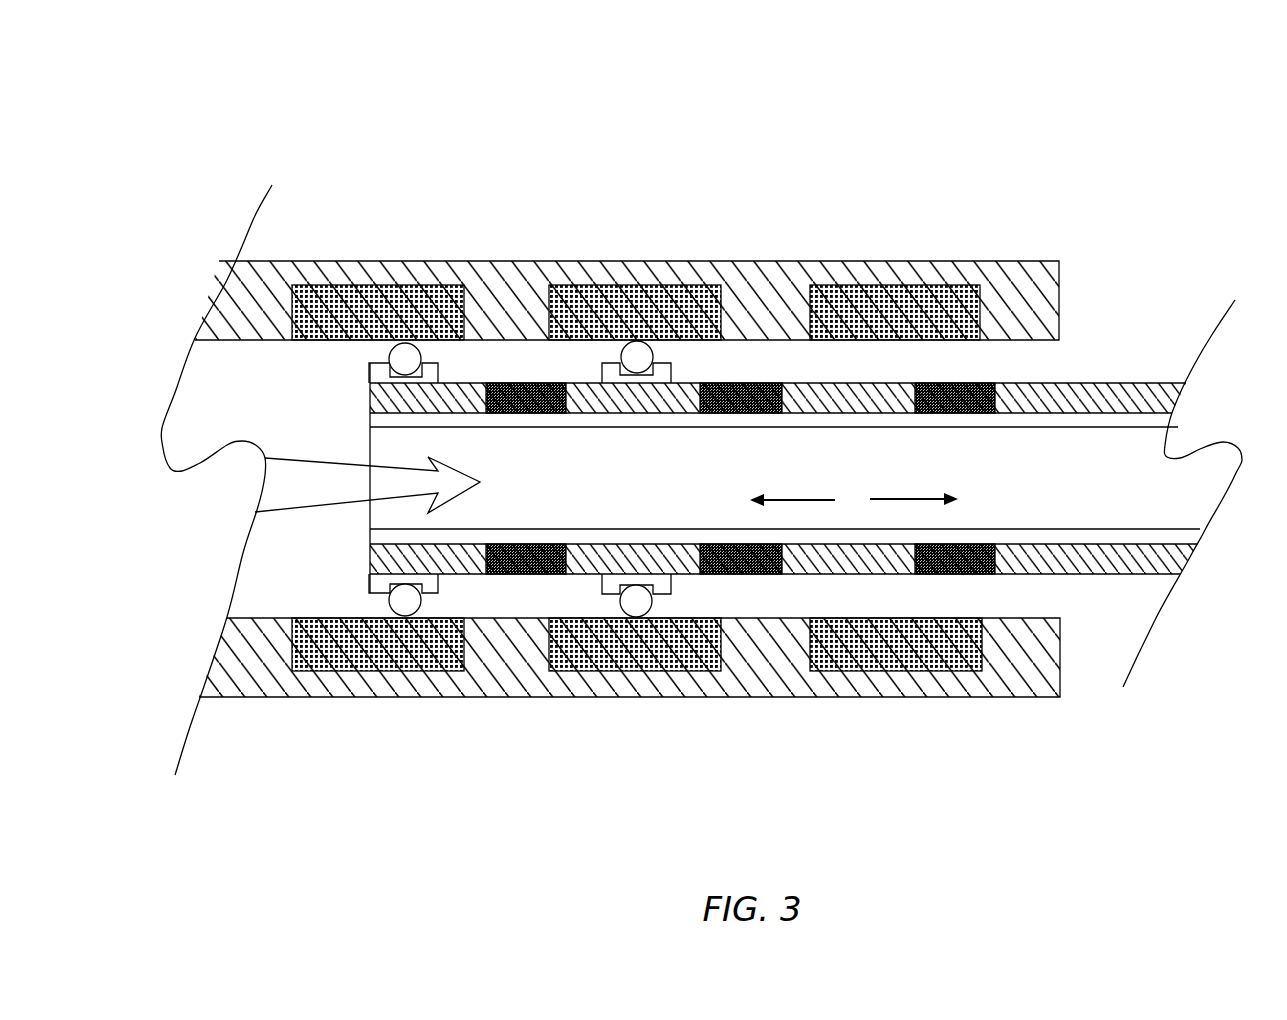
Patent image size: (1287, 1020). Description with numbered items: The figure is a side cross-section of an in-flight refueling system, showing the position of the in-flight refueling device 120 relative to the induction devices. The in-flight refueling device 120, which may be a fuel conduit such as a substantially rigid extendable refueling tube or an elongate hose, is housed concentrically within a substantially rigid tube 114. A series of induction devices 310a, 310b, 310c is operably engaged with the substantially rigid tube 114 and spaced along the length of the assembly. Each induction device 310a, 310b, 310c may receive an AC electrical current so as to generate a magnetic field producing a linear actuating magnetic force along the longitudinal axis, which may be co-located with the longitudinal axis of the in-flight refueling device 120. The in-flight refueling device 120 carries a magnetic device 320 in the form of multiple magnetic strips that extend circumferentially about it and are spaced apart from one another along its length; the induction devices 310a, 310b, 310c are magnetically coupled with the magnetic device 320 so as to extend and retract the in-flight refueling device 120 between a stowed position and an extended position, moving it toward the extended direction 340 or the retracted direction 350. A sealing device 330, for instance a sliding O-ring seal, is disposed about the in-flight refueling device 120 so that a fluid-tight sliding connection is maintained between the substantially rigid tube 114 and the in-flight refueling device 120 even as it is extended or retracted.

The substantially rigid tube 114 is at (260, 288).
The in-flight refueling device 120 is at (1072, 477).
The induction device 310a is at (440, 290).
The induction device 310b is at (586, 290).
The induction device 310c is at (876, 300).
The magnetic device 320 is at (530, 390).
The sealing device 330 is at (404, 343).
The extended direction 340 is at (905, 498).
The retracted direction 350 is at (795, 499).